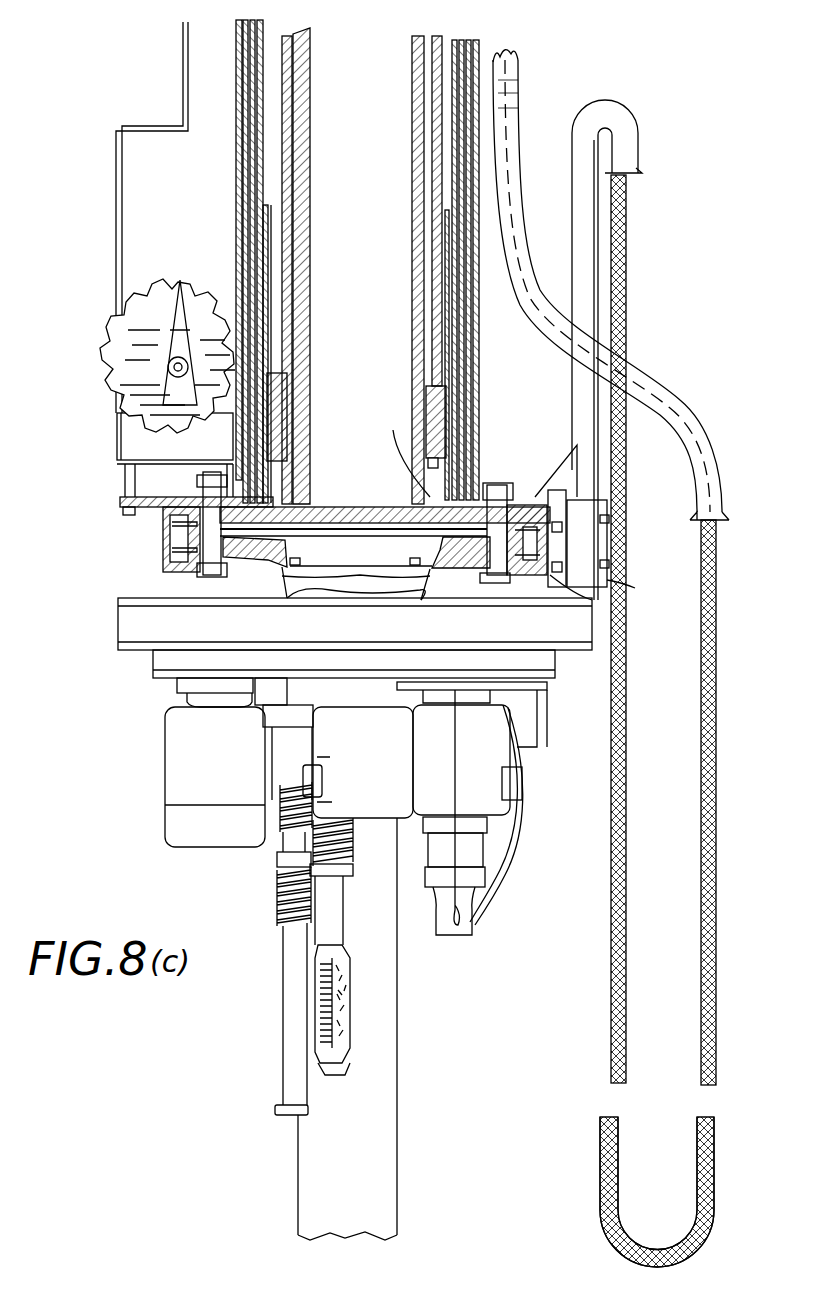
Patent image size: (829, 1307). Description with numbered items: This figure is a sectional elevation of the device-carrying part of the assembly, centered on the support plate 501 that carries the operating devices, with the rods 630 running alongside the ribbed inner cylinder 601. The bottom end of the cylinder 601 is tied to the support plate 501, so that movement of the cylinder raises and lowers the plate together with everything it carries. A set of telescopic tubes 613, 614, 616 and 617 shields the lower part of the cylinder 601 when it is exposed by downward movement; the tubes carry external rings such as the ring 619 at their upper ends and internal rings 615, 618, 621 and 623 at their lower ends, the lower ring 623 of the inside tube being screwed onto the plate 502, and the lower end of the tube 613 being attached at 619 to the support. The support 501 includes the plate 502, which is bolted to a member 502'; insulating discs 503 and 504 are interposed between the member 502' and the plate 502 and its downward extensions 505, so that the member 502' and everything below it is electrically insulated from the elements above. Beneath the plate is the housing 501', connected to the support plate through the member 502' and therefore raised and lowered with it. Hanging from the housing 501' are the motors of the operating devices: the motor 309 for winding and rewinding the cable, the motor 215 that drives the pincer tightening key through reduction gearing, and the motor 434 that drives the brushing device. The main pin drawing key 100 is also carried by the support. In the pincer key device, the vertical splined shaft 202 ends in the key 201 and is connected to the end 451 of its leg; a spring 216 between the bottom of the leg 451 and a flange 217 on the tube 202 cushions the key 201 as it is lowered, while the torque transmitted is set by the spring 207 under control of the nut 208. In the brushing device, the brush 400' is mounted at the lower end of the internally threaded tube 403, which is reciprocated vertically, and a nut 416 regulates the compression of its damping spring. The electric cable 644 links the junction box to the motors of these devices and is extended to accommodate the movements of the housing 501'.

The rods 630 is at (280, 170).
The inner cylinder 601 is at (412, 225).
The telescopic tube 613 is at (483, 76).
The telescopic tube 614 is at (480, 83).
The telescopic tube 616 is at (480, 95).
The telescopic tube 617 is at (480, 110).
The cable 644 is at (720, 715).
The downward extensions 505 is at (163, 537).
The insulating disc 504 is at (162, 558).
The support plate 501 is at (385, 485).
The plate 502 is at (353, 499).
The insulating disc 503 is at (302, 545).
The external ring 619 is at (443, 540).
The internal ring 615 is at (472, 488).
The internal ring 618 is at (470, 495).
The internal ring 621 is at (463, 500).
The lower ring 623 is at (388, 460).
The member 502' is at (439, 589).
The housing 501' is at (338, 656).
The motor 215 is at (177, 778).
The spring 207 is at (277, 800).
The motor 434 is at (385, 772).
The motor 309 is at (512, 765).
The nut 208 is at (293, 832).
The end of leg 451 is at (278, 860).
The spring 216 is at (275, 909).
The flange 217 is at (295, 931).
The nut 416 is at (353, 868).
The internally threaded tube 403 is at (337, 923).
The brush 400' is at (395, 1010).
The shaft 202 is at (285, 1053).
The key 201 is at (285, 1112).
The main pin drawing key 100 is at (377, 1172).